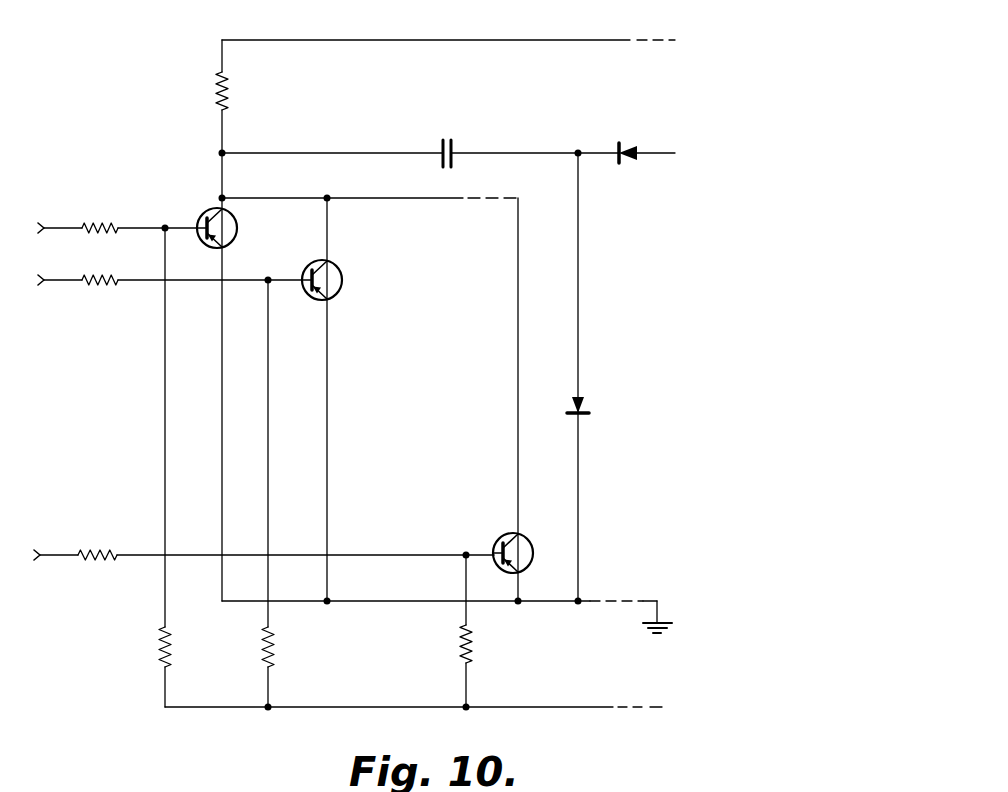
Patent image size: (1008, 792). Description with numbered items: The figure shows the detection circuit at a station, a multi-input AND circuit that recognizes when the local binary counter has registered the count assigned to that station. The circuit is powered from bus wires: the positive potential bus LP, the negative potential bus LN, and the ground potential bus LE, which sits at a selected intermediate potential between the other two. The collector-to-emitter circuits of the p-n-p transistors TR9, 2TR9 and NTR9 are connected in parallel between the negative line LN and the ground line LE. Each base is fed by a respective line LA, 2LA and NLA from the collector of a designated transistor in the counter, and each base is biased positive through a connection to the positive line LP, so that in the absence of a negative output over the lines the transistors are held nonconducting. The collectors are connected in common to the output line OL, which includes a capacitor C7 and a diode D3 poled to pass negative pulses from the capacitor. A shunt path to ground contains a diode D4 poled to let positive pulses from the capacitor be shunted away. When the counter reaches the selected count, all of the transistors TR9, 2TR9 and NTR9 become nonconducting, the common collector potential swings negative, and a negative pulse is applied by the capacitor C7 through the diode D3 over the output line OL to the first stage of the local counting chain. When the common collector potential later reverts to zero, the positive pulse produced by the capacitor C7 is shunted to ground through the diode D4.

The negative potential bus LN is at (616, 35).
The output line OL is at (379, 150).
The capacitor C7 is at (460, 145).
The diode D3 is at (625, 150).
The diode D4 is at (586, 408).
The line LA is at (145, 226).
The transistor TR9 is at (238, 228).
The second line 2LA is at (134, 268).
The second transistor 2TR9 is at (343, 280).
The nth line NLA is at (126, 541).
The nth transistor NTR9 is at (496, 540).
The ground potential bus LE is at (652, 596).
The positive potential bus LP is at (656, 700).